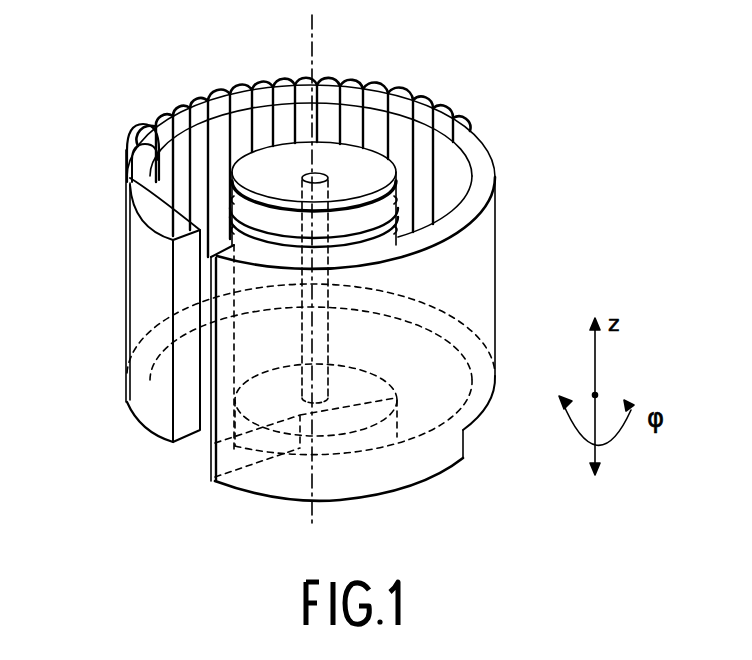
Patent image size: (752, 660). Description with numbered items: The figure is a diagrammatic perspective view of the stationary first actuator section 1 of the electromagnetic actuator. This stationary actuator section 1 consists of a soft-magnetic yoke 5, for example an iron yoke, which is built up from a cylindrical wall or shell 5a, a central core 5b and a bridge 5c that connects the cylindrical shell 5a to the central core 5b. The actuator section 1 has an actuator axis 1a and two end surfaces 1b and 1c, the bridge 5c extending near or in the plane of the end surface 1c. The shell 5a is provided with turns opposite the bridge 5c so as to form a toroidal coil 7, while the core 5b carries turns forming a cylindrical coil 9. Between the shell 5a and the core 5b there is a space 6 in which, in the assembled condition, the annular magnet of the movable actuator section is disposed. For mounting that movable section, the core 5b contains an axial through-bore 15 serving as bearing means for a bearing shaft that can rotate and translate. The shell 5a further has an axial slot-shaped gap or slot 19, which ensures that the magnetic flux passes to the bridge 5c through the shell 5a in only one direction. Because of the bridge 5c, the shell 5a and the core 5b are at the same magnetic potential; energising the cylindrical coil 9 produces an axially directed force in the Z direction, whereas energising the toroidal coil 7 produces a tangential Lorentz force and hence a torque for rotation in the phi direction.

The stationary first actuator section 1 is at (504, 332).
The actuator axis 1a is at (316, 34).
The end surface 1b is at (477, 147).
The end surface 1c is at (195, 442).
The soft-magnetic yoke 5 is at (145, 307).
The cylindrical wall or shell 5a is at (497, 254).
The central core 5b is at (287, 157).
The bridge 5c is at (413, 463).
The space 6 is at (423, 187).
The toroidal coil 7 is at (422, 90).
The cylindrical coil 9 is at (400, 208).
The axial through-bore 15 is at (253, 143).
The axial slot-shaped gap or slot 19 is at (182, 277).